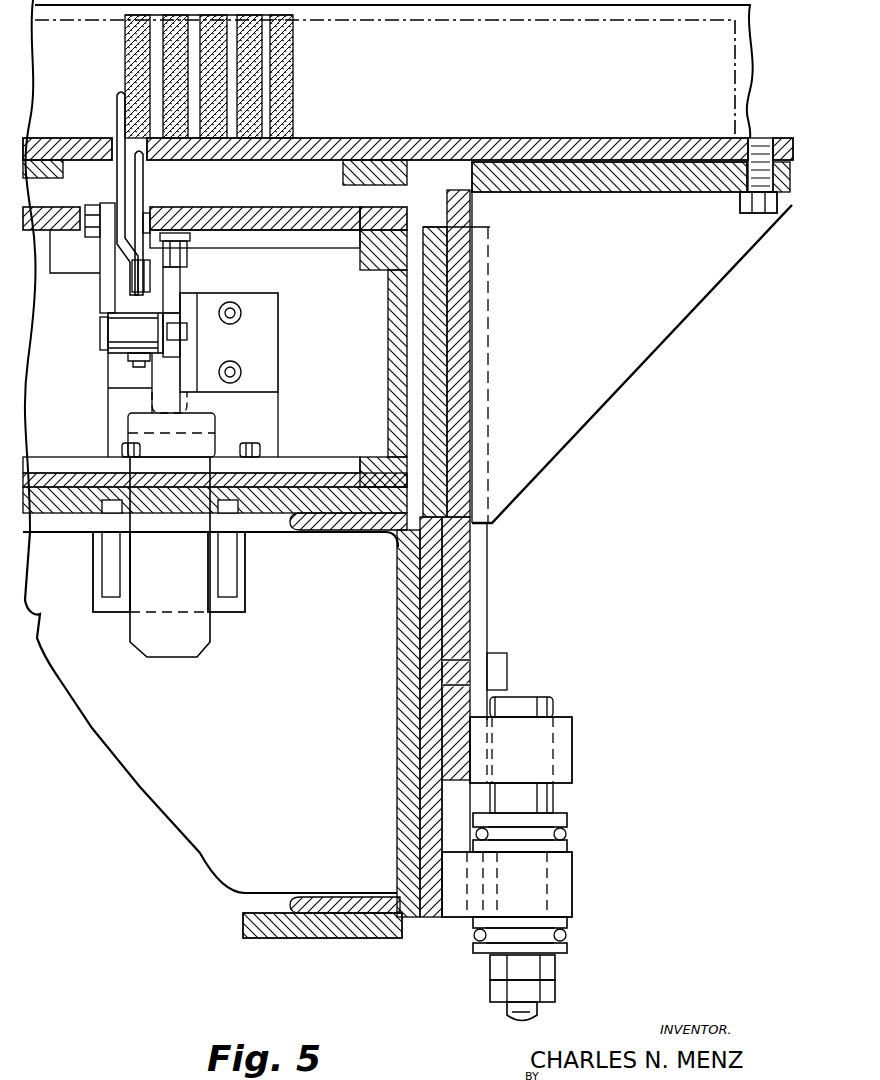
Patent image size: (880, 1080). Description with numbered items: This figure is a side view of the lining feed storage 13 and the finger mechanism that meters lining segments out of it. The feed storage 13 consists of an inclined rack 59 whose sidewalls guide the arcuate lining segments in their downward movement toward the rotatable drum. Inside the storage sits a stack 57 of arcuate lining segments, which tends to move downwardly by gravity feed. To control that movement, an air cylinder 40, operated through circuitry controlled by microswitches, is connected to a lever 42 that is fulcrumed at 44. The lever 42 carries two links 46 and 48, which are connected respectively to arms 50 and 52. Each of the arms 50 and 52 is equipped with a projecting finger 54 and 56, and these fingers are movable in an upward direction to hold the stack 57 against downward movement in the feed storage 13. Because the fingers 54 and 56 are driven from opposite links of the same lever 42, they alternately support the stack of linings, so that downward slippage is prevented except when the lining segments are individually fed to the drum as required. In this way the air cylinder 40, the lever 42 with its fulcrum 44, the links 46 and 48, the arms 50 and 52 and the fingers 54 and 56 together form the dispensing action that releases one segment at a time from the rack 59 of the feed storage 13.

The lining feed storage 13 is at (357, 140).
The air cylinder 40 is at (200, 630).
The lever 42 is at (172, 370).
The fulcrum 44 is at (193, 343).
The link 46 is at (106, 298).
The link 48 is at (158, 290).
The arm 50 is at (110, 264).
The arm 52 is at (148, 230).
The projecting finger 54 is at (117, 112).
The projecting finger 56 is at (142, 172).
The stack of arcuate lining segments 57 is at (262, 66).
The inclined rack 59 is at (512, 140).